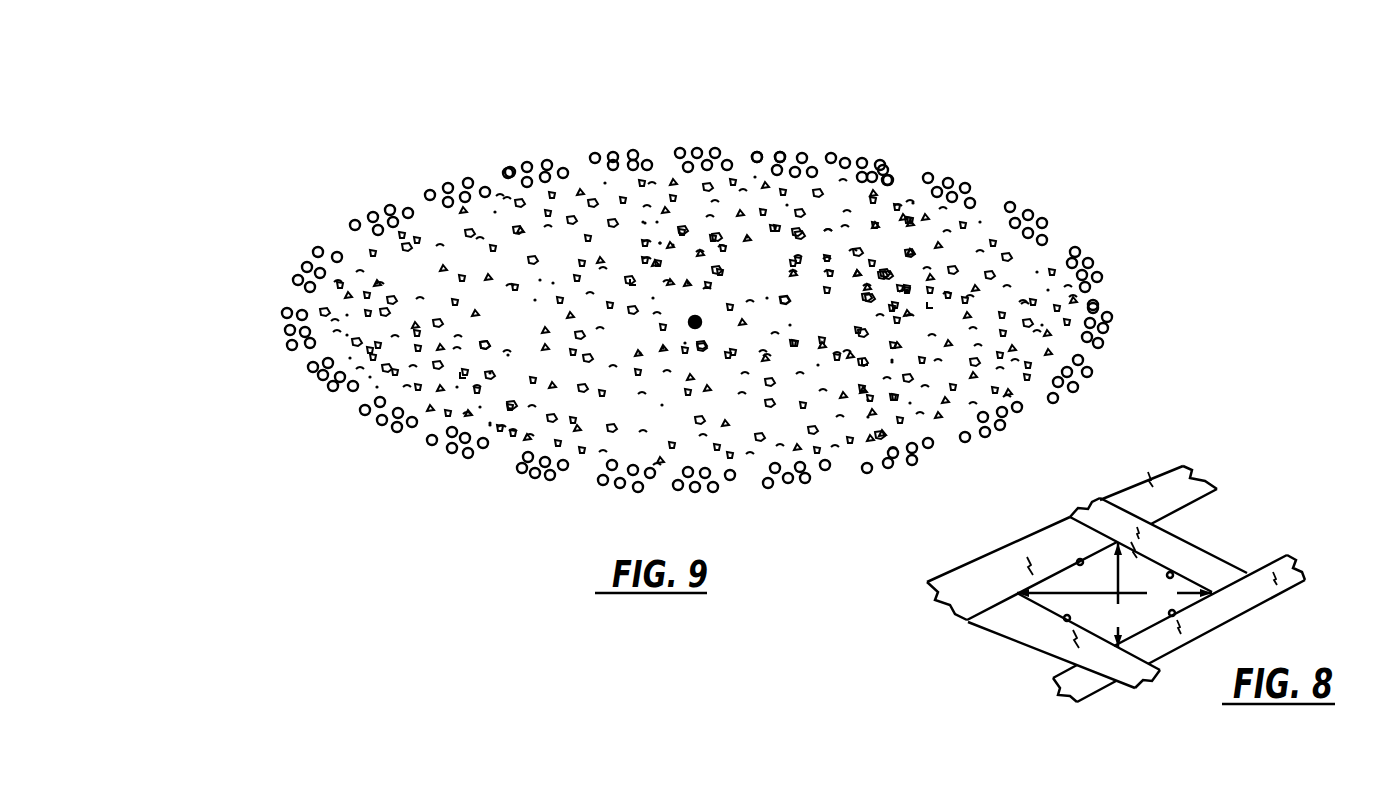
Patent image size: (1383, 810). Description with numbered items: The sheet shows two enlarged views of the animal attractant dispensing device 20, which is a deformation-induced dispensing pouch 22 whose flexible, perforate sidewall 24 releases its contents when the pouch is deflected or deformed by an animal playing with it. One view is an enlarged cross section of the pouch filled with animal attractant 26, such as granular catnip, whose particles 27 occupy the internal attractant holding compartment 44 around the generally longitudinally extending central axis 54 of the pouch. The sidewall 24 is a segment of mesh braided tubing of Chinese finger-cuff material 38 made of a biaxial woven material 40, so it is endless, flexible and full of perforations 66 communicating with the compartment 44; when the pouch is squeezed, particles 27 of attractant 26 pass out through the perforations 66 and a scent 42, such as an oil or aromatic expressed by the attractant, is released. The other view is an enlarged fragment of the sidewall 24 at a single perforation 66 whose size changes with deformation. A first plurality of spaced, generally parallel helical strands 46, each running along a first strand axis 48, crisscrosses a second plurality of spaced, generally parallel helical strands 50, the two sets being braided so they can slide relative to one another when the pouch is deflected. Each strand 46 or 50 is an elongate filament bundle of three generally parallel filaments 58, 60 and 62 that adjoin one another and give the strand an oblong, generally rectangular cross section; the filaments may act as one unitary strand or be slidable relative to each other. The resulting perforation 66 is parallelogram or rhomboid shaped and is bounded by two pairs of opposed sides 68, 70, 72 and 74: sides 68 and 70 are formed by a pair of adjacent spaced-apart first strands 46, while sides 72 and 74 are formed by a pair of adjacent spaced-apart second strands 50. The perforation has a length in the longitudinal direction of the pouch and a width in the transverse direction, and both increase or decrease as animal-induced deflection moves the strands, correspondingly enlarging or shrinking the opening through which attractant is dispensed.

In FIG. 9, the animal attractant dispensing device 20 is at (1053, 145).
In FIG. 9, the pouch 22 is at (262, 222).
In FIG. 9, the sidewall 24 is at (1122, 227).
In FIG. 9, the animal attractant 26 is at (440, 233).
In FIG. 9, the particles 27 is at (790, 301).
In FIG. 9, the Chinese finger-cuff material 38 is at (277, 322).
In FIG. 9, the biaxial woven material 40 is at (375, 430).
In FIG. 8, the biaxial woven material 40 is at (953, 575).
In FIG. 9, the scent 42 is at (320, 220).
In FIG. 9, the attractant holding compartment 44 is at (530, 326).
In FIG. 9, the first strands 46 is at (360, 217).
In FIG. 8, the first strand axis 48 is at (1143, 569).
In FIG. 9, the second strands 50 is at (524, 162).
In FIG. 8, the second strands 50 is at (1196, 478).
In FIG. 9, the central axis 54 is at (703, 318).
In FIG. 9, the filament 58 is at (757, 152).
In FIG. 9, the filament 60 is at (782, 154).
In FIG. 9, the filament 62 is at (831, 153).
In FIG. 9, the perforations 66 is at (658, 158).
In FIG. 8, the perforations 66 is at (1145, 555).
In FIG. 8, the side 68 is at (1172, 574).
In FIG. 8, the side 70 is at (1064, 619).
In FIG. 8, the side 72 is at (1078, 560).
In FIG. 8, the side 74 is at (1175, 615).